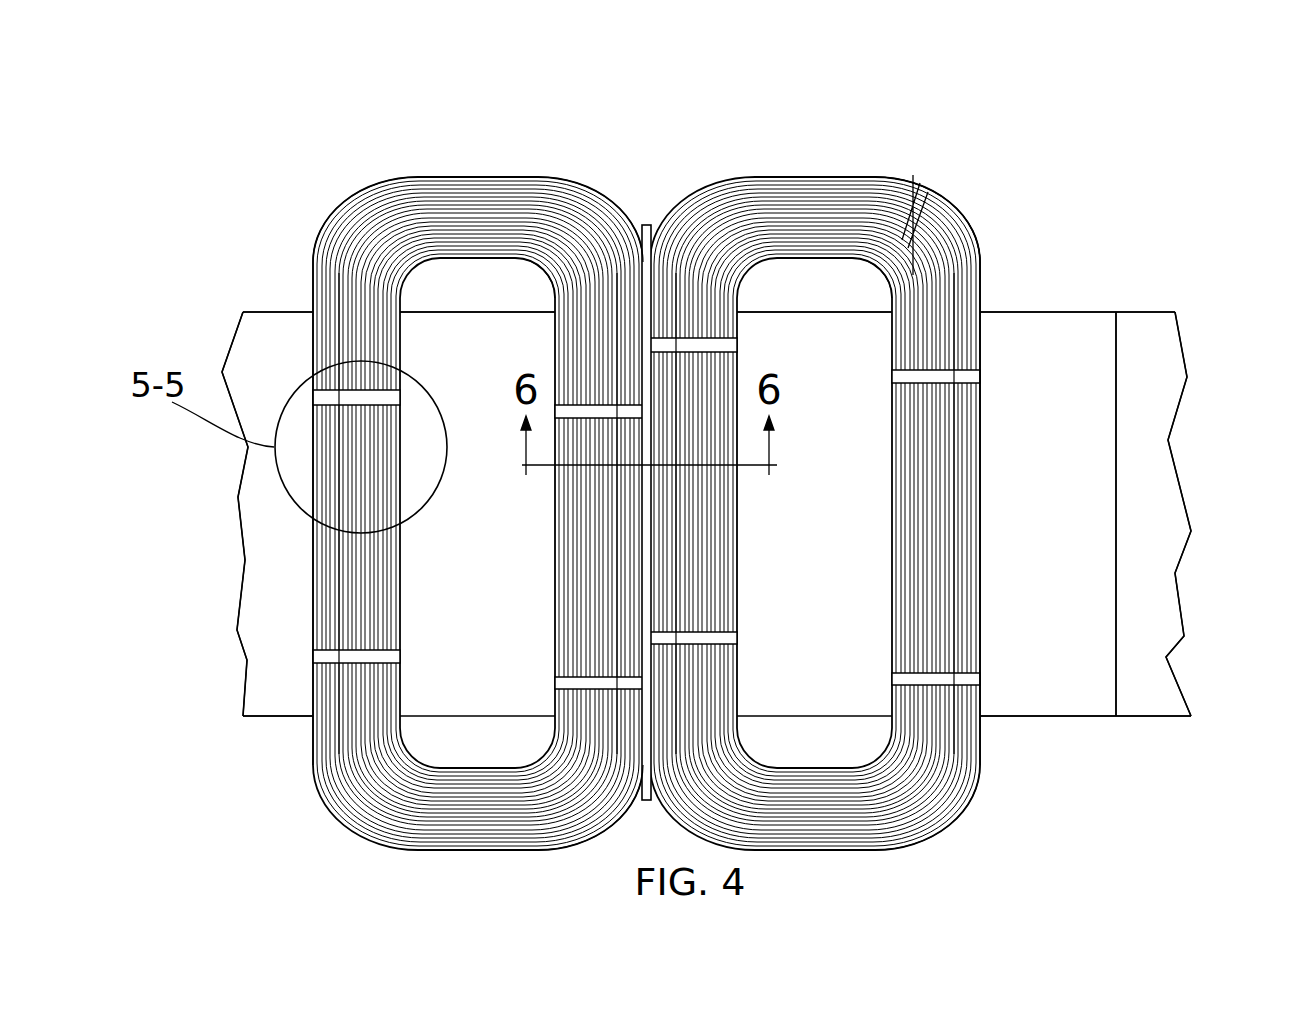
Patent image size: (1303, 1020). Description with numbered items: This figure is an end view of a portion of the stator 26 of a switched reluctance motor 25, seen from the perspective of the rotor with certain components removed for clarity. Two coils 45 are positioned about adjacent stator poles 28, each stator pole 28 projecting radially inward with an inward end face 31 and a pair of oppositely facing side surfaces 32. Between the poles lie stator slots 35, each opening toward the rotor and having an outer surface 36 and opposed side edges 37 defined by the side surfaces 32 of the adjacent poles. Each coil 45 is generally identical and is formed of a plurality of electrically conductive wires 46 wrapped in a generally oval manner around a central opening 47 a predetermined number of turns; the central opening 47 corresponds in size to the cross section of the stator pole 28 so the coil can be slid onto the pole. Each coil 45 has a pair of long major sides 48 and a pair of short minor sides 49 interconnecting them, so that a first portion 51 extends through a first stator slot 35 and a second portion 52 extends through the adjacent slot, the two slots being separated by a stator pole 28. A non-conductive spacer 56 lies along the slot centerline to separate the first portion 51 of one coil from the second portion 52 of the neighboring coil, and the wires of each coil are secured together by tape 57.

The switched reluctance motor 25 is at (884, 108).
The stator 26 is at (1042, 310).
The stator pole 28 is at (1162, 345).
The inward end face 31 is at (492, 340).
The side surface 32 is at (897, 605).
The stator slot 35 is at (298, 728).
The outer surface 36 is at (272, 697).
The side edge 37 is at (1112, 625).
The coil 45 is at (347, 246).
The electrically conductive wire 46 is at (920, 248).
The central opening 47 is at (415, 288).
The major side 48 is at (318, 548).
The minor side 49 is at (467, 195).
The first portion 51 is at (340, 326).
The second portion 52 is at (582, 371).
The non-conductive spacer 56 is at (646, 803).
The tape 57 is at (326, 398).